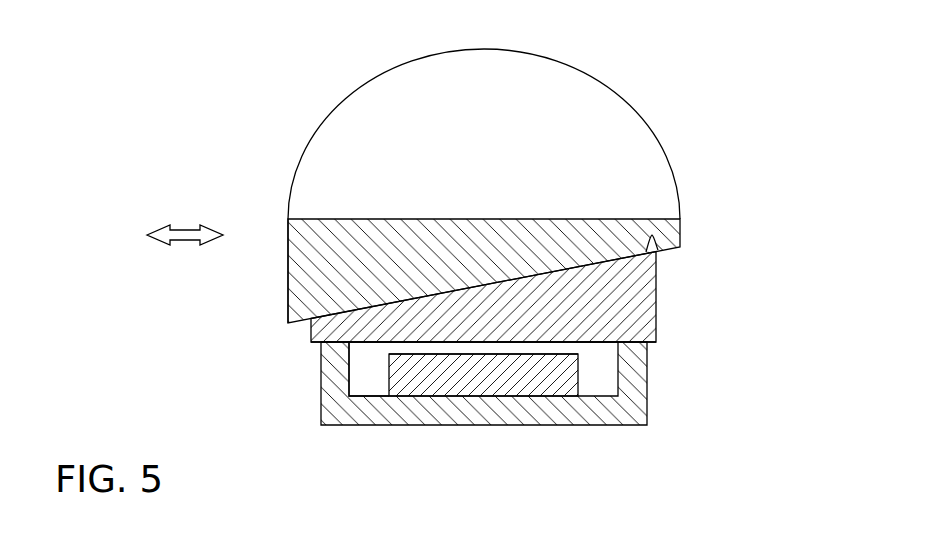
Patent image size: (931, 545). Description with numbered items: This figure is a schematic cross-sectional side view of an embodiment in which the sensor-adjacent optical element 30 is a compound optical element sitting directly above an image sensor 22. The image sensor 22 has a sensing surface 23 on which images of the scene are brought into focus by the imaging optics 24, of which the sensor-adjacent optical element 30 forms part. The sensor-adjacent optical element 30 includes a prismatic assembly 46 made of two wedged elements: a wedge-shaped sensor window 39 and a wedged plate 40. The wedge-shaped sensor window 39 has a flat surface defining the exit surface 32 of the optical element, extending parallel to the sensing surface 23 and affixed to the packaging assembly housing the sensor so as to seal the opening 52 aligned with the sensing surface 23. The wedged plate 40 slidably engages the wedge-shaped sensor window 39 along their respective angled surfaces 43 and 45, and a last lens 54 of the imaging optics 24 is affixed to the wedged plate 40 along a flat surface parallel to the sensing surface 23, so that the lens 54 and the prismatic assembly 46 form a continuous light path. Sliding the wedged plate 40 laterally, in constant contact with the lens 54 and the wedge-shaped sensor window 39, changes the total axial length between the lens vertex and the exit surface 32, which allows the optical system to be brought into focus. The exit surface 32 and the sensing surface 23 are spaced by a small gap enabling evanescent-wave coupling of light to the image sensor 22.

The sensor-adjacent optical element 30 is at (511, 195).
The last lens 54 is at (598, 115).
The prismatic assembly 46 is at (469, 256).
The angled surface 43 is at (487, 246).
The wedged plate 40 is at (288, 228).
The angled surface 45 is at (660, 247).
The wedge-shaped sensor window 39 is at (517, 297).
The opening 52 is at (516, 395).
The image sensor 22 is at (433, 380).
The exit surface 32 is at (362, 343).
The imaging optics 24 is at (469, 347).
The sensing surface 23 is at (534, 349).